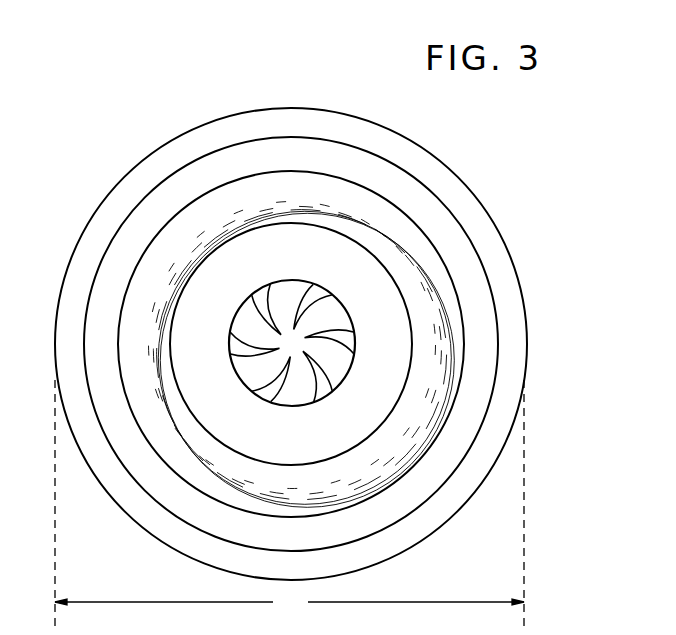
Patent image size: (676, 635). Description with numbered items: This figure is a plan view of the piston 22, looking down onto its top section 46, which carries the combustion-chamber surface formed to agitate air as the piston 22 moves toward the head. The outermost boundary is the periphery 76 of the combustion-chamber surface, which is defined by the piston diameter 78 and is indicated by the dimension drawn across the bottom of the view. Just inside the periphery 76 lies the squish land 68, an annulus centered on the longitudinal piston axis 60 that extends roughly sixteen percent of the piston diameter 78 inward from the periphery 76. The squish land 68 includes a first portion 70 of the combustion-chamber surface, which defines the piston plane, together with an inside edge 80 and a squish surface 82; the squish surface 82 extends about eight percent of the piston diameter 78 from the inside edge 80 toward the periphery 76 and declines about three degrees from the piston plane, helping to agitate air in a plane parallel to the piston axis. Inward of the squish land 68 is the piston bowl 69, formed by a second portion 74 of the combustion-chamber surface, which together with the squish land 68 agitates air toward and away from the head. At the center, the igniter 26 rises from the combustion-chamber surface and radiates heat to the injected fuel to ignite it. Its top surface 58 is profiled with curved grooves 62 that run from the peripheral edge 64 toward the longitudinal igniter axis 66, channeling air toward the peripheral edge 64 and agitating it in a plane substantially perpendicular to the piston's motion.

The piston 22 is at (429, 143).
The igniter 26 is at (334, 283).
The top section 46 is at (455, 163).
The top surface 58 is at (355, 319).
The longitudinal piston axis 60 is at (264, 378).
The grooves 62 is at (297, 284).
The peripheral edge 64 is at (340, 303).
The longitudinal igniter axis 66 is at (255, 344).
The squish land 68 is at (238, 113).
The piston bowl 69 is at (190, 465).
The first portion of the combustion-chamber surface 70 is at (305, 135).
The second portion of the combustion-chamber surface 74 is at (266, 217).
The periphery 76 is at (362, 112).
The piston diameter 78 is at (289, 503).
The inside edge 80 is at (367, 190).
The squish surface 82 is at (334, 166).